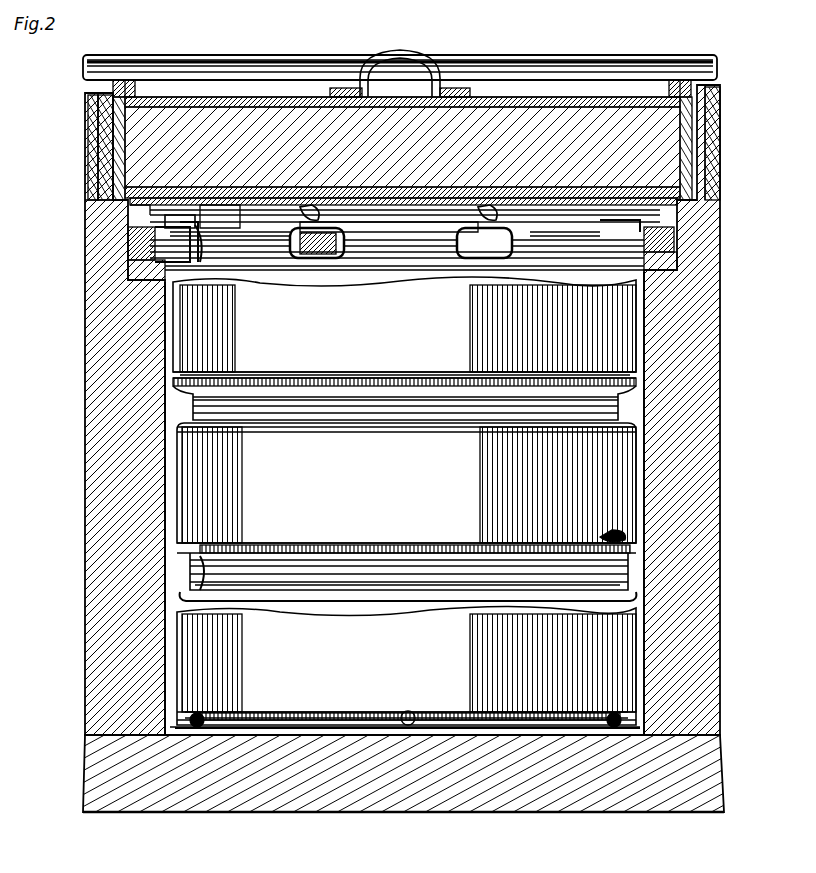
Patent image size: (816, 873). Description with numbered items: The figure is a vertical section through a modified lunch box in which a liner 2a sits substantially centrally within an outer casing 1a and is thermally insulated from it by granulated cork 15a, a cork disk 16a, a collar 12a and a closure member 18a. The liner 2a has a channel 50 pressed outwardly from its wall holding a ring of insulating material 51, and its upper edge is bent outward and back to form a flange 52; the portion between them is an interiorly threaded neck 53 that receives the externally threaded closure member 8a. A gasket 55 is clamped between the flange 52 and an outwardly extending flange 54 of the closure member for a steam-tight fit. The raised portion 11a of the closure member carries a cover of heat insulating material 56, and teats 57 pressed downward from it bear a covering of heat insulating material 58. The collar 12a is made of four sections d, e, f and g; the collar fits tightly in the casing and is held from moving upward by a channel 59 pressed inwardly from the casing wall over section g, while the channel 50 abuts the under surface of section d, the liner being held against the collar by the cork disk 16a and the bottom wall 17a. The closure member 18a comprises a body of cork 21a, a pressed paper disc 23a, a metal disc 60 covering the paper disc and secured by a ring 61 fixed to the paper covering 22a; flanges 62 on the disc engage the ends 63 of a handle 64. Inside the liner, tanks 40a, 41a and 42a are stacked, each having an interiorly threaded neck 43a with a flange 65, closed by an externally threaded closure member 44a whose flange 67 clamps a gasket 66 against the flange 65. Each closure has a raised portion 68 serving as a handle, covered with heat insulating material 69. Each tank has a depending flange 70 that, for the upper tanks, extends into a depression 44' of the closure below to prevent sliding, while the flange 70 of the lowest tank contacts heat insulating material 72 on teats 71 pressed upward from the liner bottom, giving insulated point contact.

The outer casing 1a is at (720, 495).
The liner 2a is at (648, 535).
The collar 12a is at (712, 140).
The granulated cork 15a is at (632, 547).
The cork disk 16a is at (438, 800).
The bottom wall 17a is at (367, 812).
The closure member 18a is at (255, 95).
The body of cork 21a is at (510, 125).
The paper covering 22a is at (691, 82).
The pressed paper disc 23a is at (632, 100).
The tank 40a is at (405, 666).
The tank 41a is at (406, 483).
The tank 42a is at (404, 348).
The neck 43a is at (175, 290).
The closure member 44a is at (295, 232).
The depression 44' is at (238, 537).
The channel 50 is at (150, 272).
The ring of insulating material 51 is at (125, 198).
The flange 52 is at (497, 215).
The neck 53 is at (150, 252).
The flange 54 is at (700, 197).
The gasket 55 is at (528, 212).
The cover of heat insulating material 56 is at (445, 212).
The teats 57 is at (330, 228).
The covering of heat insulating material 58 is at (362, 222).
The channel 59 is at (108, 88).
The metal disc 60 is at (575, 97).
The ring 61 is at (135, 80).
The flanges 62 is at (455, 90).
The ends 63 is at (345, 90).
The handle 64 is at (400, 52).
The flange 65 is at (178, 215).
The gasket 66 is at (232, 222).
The flange 67 is at (205, 215).
The raised portion 68 is at (556, 222).
The covering of heat insulating material 69 is at (478, 228).
The depending flange 70 is at (275, 555).
The teats 71 is at (235, 725).
The heat insulating material 72 is at (203, 715).
The closure member 8a is at (258, 215).
The portion 11a is at (405, 222).
The section d is at (140, 240).
The section e is at (130, 220).
The section f is at (108, 160).
The section g is at (92, 118).